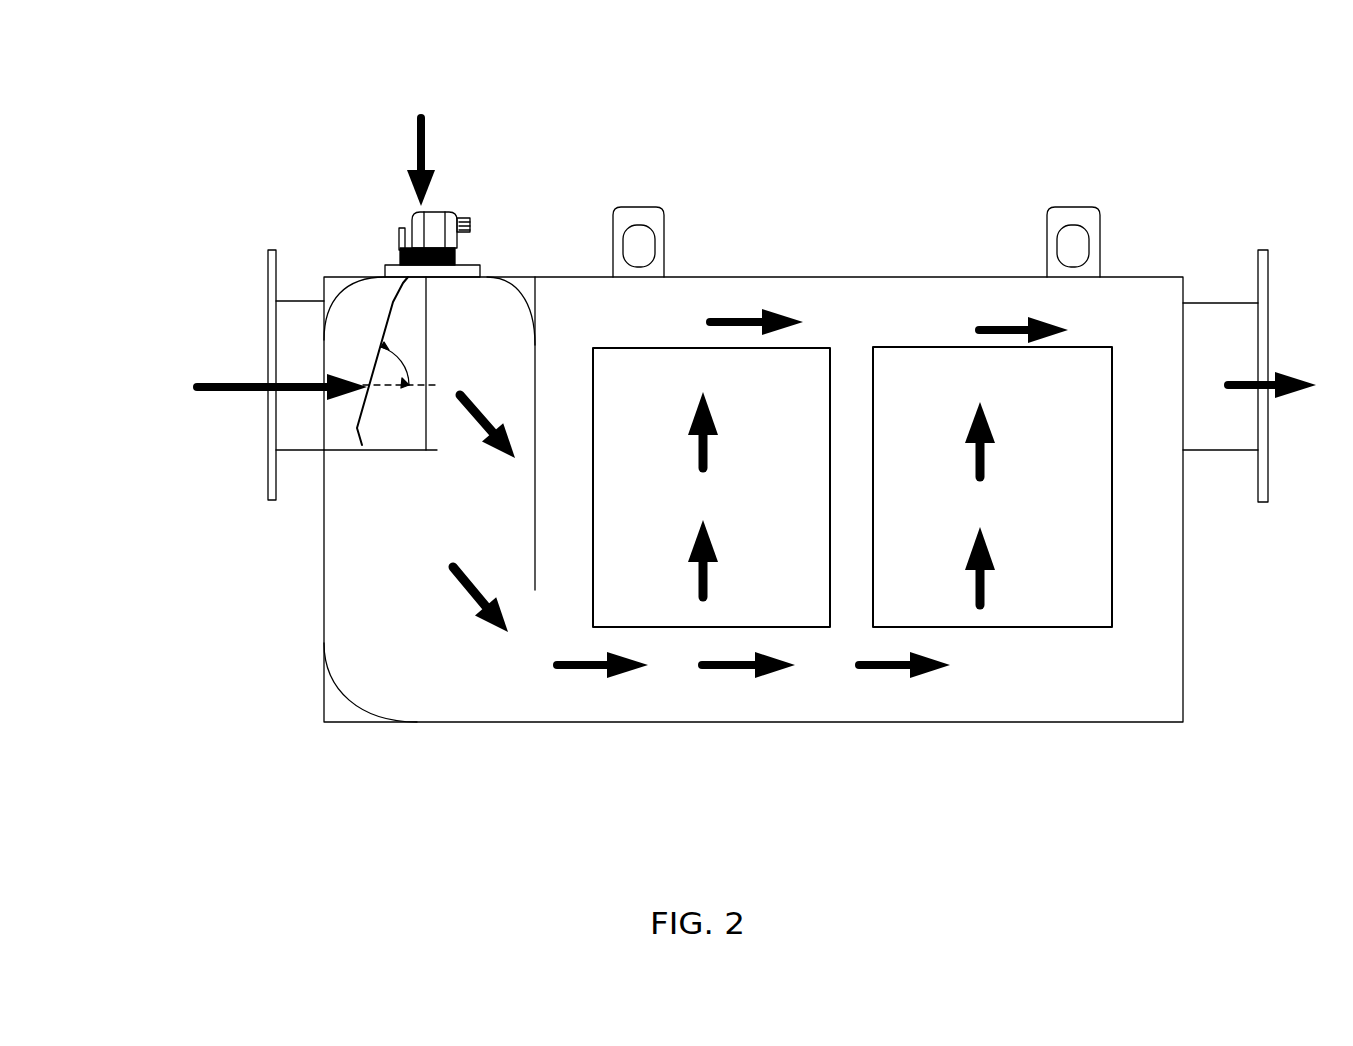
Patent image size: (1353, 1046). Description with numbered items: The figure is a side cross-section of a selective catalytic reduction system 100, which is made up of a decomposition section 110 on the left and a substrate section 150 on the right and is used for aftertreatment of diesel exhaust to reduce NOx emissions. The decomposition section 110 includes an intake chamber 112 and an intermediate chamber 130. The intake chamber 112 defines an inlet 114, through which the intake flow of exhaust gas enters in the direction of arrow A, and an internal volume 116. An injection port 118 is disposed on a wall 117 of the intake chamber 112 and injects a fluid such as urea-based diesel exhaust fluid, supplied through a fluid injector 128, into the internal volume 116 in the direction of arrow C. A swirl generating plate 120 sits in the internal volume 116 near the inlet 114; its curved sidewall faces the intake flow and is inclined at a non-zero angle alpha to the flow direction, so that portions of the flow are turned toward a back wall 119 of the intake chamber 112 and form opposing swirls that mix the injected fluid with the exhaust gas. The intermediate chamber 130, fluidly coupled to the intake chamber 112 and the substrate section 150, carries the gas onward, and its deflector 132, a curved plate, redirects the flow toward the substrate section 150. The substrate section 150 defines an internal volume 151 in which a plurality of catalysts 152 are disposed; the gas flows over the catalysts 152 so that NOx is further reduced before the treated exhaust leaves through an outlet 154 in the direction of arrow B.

The selective catalytic reduction system 100 is at (289, 104).
The decomposition section 110 is at (331, 203).
The intake chamber 112 is at (350, 320).
The inlet 114 is at (267, 322).
The internal volume 116 is at (492, 305).
The wall 117 is at (384, 273).
The injection port 118 is at (458, 263).
The back wall 119 is at (535, 390).
The swirl generating plate 120 is at (376, 428).
The fluid injector 128 is at (437, 222).
The intermediate chamber 130 is at (453, 688).
The deflector 132 is at (331, 680).
The substrate section 150 is at (809, 245).
The internal volume 151 is at (820, 668).
The catalysts 152 is at (697, 357).
The outlet 154 is at (1222, 325).